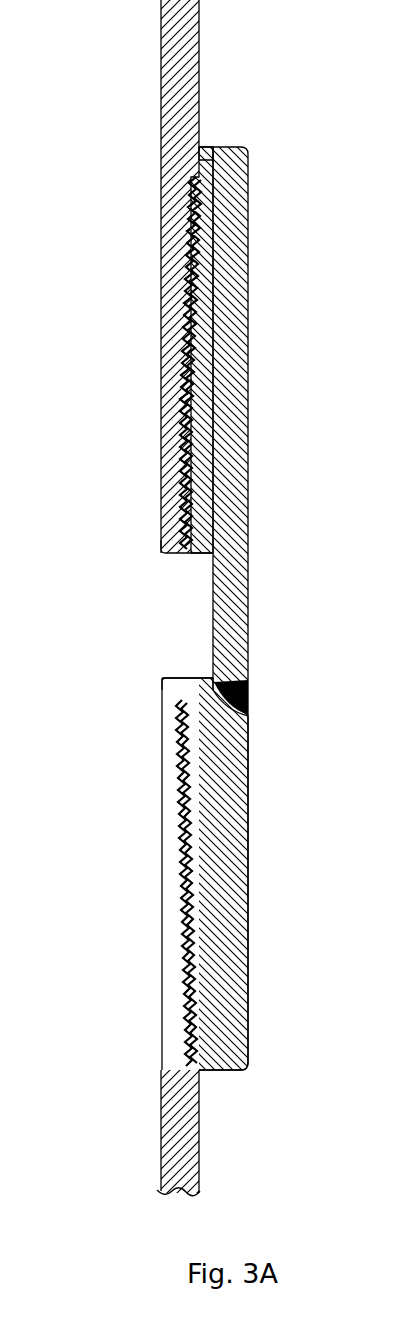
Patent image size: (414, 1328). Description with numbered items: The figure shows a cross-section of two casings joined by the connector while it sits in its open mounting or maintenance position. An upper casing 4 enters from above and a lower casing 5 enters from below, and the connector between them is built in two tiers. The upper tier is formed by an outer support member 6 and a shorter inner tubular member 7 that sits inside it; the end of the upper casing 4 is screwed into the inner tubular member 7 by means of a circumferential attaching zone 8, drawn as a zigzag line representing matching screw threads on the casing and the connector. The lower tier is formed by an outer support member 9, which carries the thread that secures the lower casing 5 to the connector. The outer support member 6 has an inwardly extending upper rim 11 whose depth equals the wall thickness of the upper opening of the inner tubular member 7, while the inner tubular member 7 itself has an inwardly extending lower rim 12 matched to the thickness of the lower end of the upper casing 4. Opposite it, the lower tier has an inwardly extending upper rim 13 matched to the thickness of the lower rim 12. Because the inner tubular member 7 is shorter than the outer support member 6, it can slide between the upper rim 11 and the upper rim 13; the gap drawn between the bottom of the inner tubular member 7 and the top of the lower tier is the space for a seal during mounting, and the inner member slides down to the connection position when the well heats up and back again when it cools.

The upper casing 4 is at (162, 128).
The lower casing 5 is at (170, 1060).
The outer support member 6 is at (248, 620).
The inner tubular member 7 is at (205, 353).
The circumferential attaching zone 8 is at (187, 415).
The outer support member 9 is at (222, 798).
The inwardly extending upper rim 11 is at (207, 148).
The inwardly extending lower rim 12 is at (158, 542).
The inwardly extending upper rim 13 is at (158, 687).